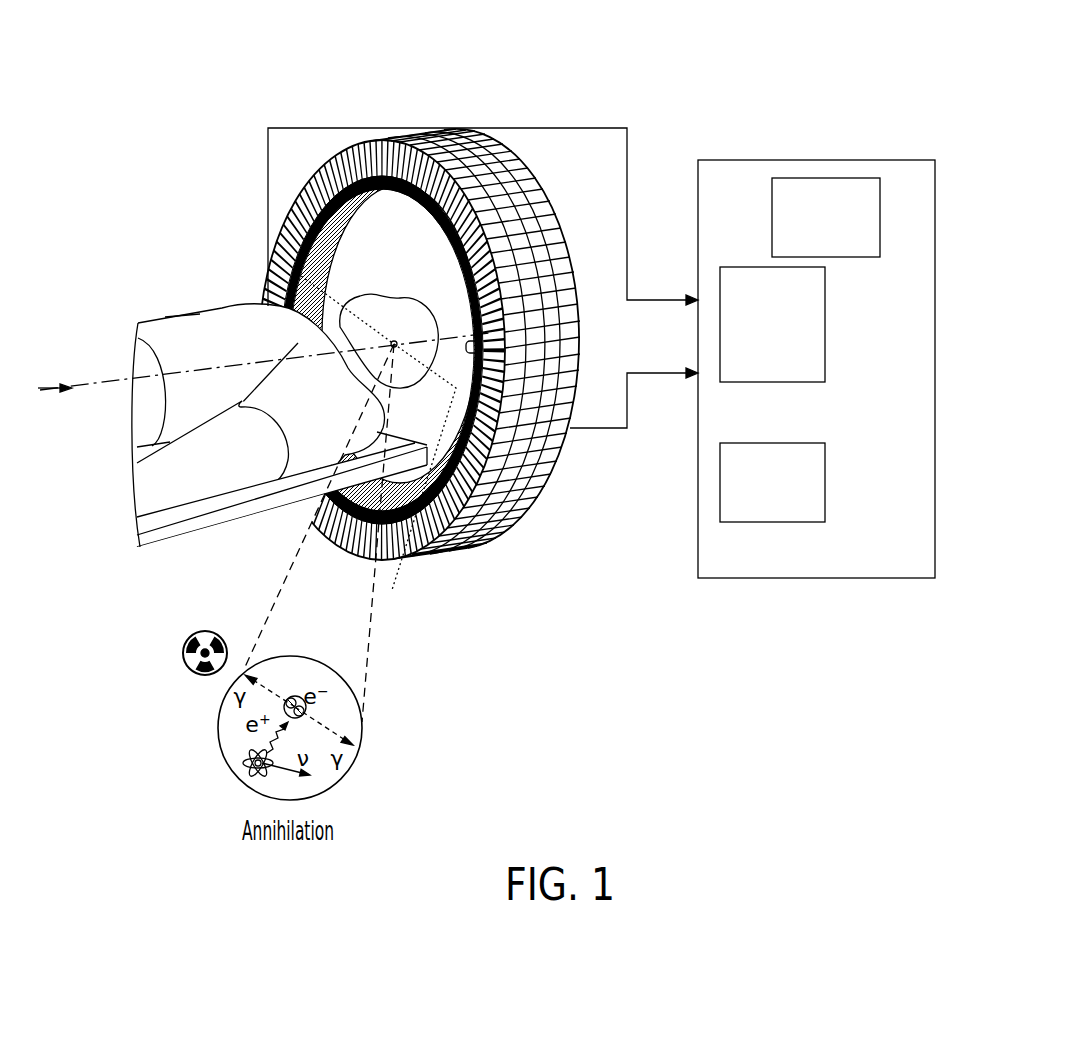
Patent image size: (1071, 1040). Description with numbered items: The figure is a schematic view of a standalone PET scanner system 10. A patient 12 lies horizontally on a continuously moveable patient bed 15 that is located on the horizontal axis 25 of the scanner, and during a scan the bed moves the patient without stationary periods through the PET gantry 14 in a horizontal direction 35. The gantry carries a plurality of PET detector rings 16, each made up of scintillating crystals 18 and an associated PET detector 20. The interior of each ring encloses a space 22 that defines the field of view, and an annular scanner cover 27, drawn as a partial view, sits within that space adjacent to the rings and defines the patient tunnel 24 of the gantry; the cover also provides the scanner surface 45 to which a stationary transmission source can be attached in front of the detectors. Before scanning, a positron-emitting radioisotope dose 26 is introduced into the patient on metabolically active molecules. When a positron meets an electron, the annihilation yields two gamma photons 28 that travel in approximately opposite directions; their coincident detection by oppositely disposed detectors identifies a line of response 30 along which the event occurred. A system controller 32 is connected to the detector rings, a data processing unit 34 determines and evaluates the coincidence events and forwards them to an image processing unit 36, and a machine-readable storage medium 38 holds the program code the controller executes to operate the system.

The PET scanner system 10 is at (178, 90).
The patient 12 is at (203, 328).
The PET gantry 14 is at (528, 158).
The patient bed 15 is at (198, 521).
The PET detector ring 16 is at (398, 165).
The scintillating crystals 18 is at (515, 521).
The PET detector 20 is at (545, 493).
The space 22 is at (503, 200).
The patient tunnel 24 is at (372, 247).
The horizontal axis 25 is at (127, 377).
The positron-emitting radioisotope dose 26 is at (160, 476).
The scanner cover 27 is at (397, 267).
The gamma photons 28 is at (233, 720).
The line of response 30 is at (374, 448).
The system controller 32 is at (816, 330).
The data processing unit 34 is at (758, 338).
The horizontal direction 35 is at (38, 388).
The image processing unit 36 is at (758, 497).
The machine-readable storage medium 38 is at (813, 229).
The scanner surface 45 is at (598, 347).